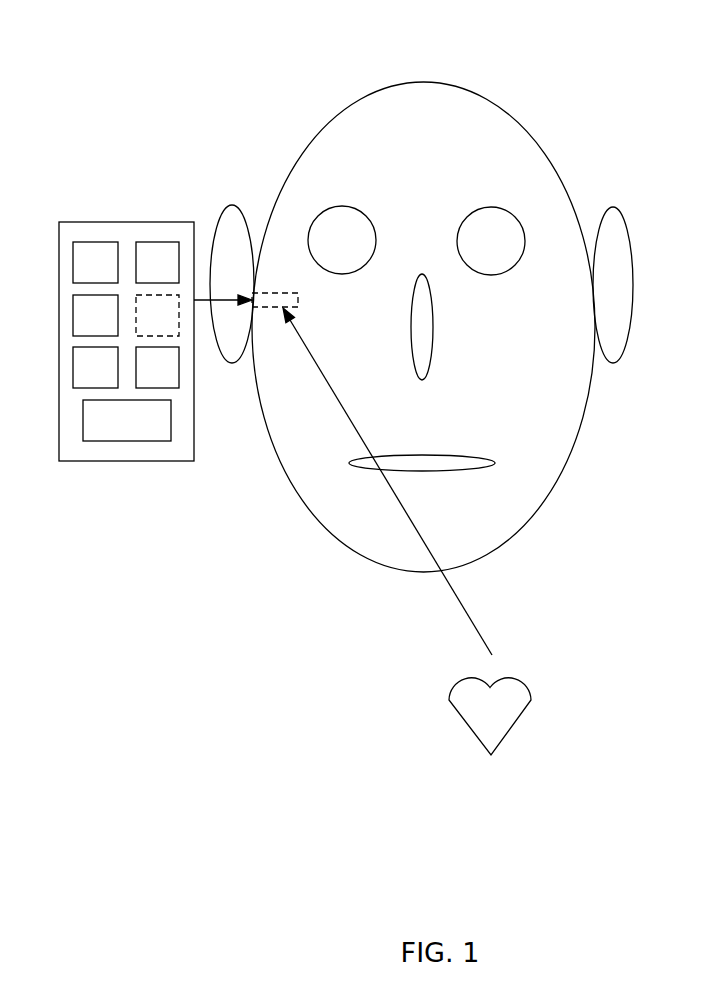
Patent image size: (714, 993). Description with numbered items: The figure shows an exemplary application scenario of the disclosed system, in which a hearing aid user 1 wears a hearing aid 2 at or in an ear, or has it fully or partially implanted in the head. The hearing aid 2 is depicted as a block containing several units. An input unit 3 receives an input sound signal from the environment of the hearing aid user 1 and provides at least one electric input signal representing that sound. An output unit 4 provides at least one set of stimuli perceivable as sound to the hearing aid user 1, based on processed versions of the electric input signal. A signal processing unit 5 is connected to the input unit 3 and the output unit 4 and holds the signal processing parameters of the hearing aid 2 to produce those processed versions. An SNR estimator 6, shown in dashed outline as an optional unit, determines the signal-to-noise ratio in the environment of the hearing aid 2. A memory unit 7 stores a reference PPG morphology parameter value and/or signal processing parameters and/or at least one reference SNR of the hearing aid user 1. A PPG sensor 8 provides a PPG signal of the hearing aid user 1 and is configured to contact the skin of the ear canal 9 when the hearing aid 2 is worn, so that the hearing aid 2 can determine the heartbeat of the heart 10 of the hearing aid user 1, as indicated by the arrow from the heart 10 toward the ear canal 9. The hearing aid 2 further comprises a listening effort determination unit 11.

The hearing aid user 1 is at (482, 97).
The hearing aid 2 is at (110, 188).
The input unit 3 is at (88, 274).
The output unit 4 is at (150, 274).
The signal processing unit 5 is at (88, 327).
The SNR estimator 6 is at (150, 327).
The memory unit 7 is at (88, 379).
The PPG sensor 8 is at (150, 379).
The ear canal 9 is at (270, 308).
The heart 10 is at (532, 708).
The listening effort determination unit 11 is at (114, 432).